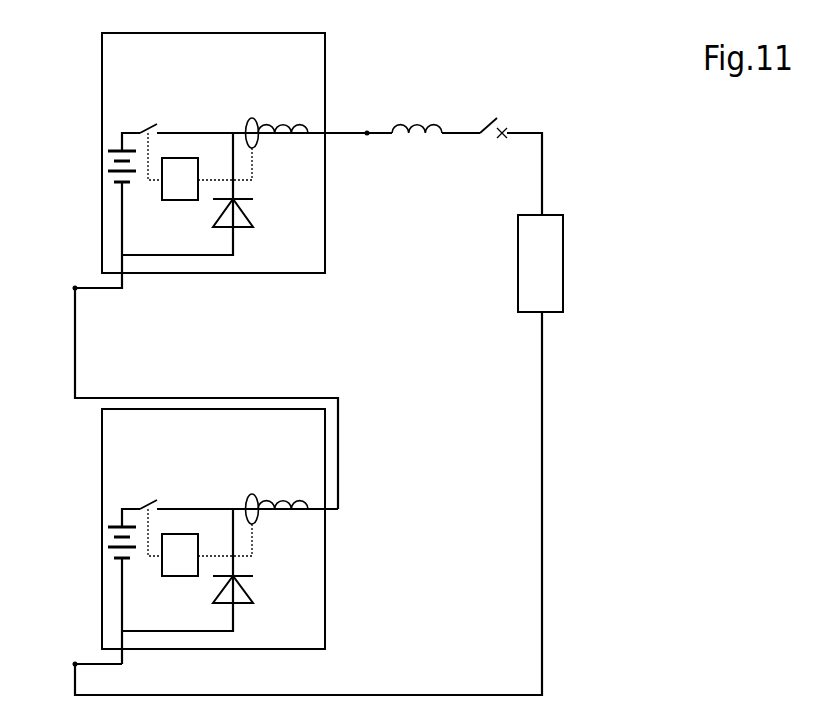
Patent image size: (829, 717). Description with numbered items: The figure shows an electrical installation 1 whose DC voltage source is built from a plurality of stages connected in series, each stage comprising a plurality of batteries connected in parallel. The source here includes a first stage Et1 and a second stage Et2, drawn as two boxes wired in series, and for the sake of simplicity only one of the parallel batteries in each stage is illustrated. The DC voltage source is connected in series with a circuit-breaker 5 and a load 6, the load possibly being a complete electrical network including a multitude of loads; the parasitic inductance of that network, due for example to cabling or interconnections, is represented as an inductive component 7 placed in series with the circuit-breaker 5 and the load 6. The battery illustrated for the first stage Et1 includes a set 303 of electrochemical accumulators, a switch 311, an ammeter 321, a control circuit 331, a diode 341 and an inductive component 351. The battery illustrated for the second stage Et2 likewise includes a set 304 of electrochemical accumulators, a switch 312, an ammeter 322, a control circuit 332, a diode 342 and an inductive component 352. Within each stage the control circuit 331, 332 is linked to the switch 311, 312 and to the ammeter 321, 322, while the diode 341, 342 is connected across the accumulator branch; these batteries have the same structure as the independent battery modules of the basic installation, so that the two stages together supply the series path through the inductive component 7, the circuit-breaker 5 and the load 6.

The electrical installation 1 is at (568, 115).
The circuit-breaker 5 is at (490, 112).
The load 6 is at (540, 263).
The inductive component 7 is at (416, 112).
The first stage Et1 is at (103, 539).
The second stage Et2 is at (103, 163).
The set of electrochemical accumulators 303 is at (104, 549).
The set of electrochemical accumulators 304 is at (104, 173).
The switch 311 is at (140, 498).
The switch 312 is at (140, 122).
The ammeter 321 is at (250, 494).
The ammeter 322 is at (250, 118).
The control circuit 331 is at (178, 534).
The control circuit 332 is at (178, 158).
The diode 341 is at (253, 590).
The diode 342 is at (253, 213).
The inductive component 351 is at (285, 496).
The inductive component 352 is at (285, 120).